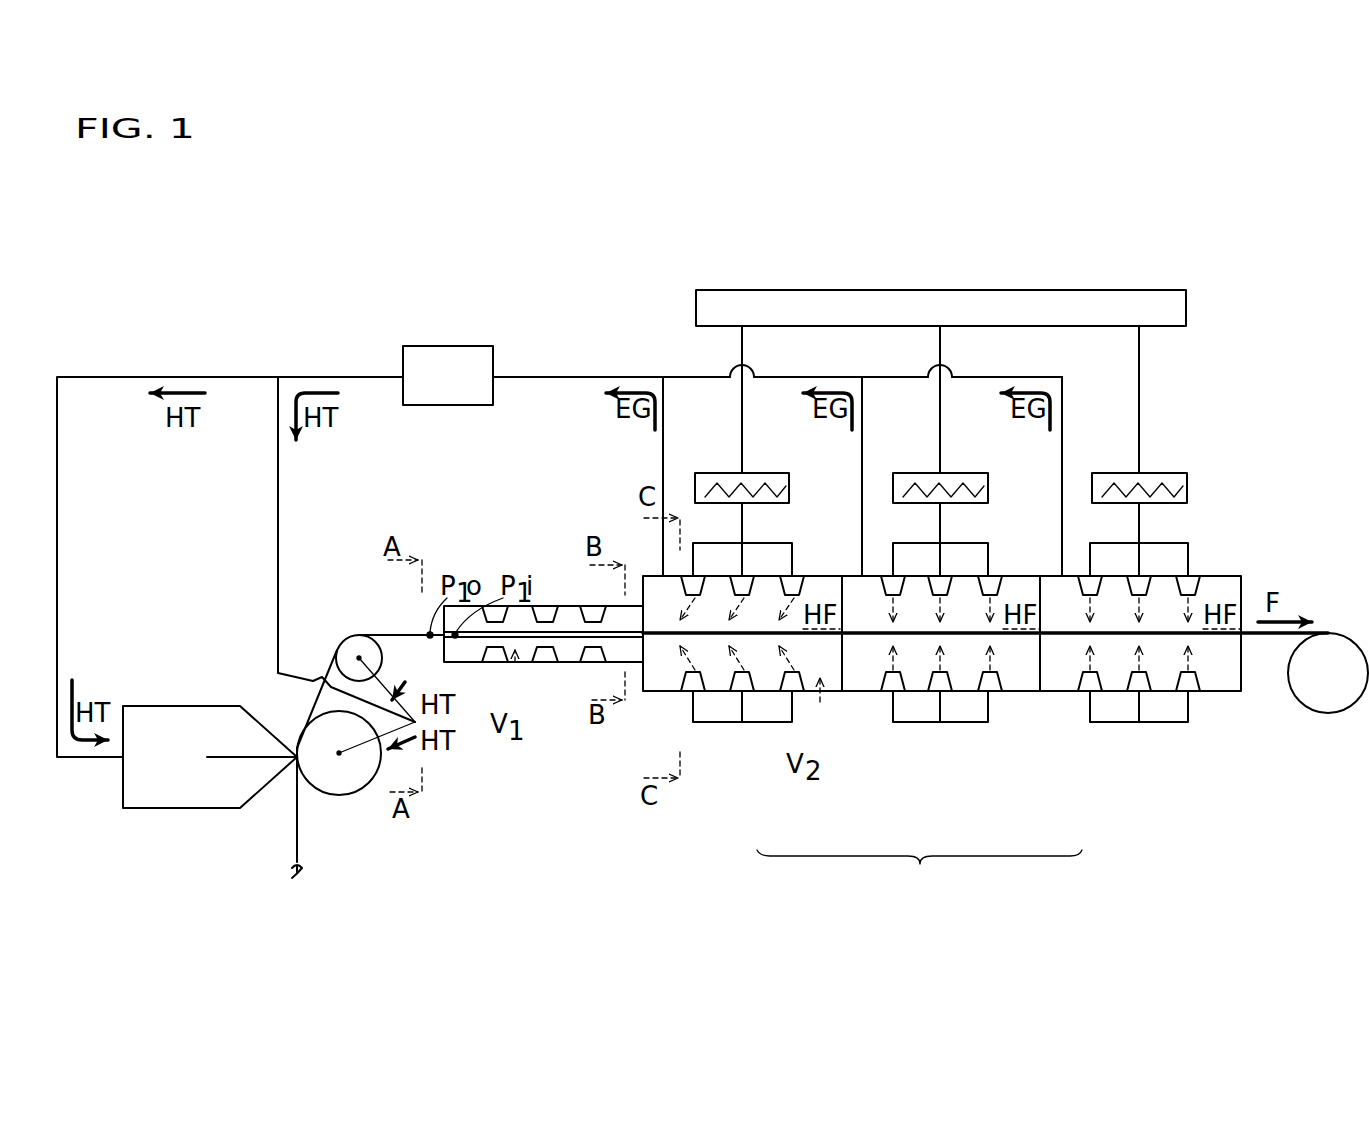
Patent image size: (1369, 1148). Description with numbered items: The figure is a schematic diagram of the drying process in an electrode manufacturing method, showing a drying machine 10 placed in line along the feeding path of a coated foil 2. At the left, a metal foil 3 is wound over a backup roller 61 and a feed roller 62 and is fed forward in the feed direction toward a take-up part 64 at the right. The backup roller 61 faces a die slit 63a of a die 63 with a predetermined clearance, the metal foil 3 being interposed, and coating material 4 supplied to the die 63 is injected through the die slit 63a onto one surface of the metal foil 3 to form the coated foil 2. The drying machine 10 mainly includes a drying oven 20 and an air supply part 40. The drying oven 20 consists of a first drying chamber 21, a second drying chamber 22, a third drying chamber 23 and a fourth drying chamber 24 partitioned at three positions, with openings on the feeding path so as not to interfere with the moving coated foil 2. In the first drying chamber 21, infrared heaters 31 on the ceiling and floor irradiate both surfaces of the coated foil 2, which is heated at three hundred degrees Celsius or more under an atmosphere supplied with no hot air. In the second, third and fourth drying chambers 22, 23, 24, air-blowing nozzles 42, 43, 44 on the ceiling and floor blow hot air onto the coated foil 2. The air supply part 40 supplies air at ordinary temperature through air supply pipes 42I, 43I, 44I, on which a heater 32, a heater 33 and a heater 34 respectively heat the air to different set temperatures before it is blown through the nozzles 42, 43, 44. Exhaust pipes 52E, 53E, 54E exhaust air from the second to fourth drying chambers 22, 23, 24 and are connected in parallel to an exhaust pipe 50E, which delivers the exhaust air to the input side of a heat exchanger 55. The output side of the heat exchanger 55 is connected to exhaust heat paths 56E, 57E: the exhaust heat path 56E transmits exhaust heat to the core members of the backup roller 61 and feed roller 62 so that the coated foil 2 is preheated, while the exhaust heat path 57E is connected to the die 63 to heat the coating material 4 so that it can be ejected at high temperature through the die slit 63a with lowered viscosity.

The drying machine 10 is at (658, 285).
The coated foil 2 is at (310, 708).
The metal foil 3 is at (297, 832).
The coating material 4 is at (288, 754).
The drying oven 20 is at (919, 874).
The first drying chamber 21 is at (645, 694).
The second drying chamber 22 is at (828, 694).
The third drying chamber 23 is at (1023, 694).
The fourth drying chamber 24 is at (1215, 694).
The infrared heaters 31 is at (545, 608).
The heater 32 is at (712, 473).
The heater 33 is at (910, 473).
The heater 34 is at (1109, 473).
The air supply part 40 is at (1105, 290).
The air-blowing nozzle 42 is at (795, 575).
The air-blowing nozzle 43 is at (994, 575).
The air-blowing nozzle 44 is at (1192, 575).
The air supply pipe 42I is at (742, 349).
The air supply pipe 43I is at (940, 349).
The air supply pipe 44I is at (1139, 364).
The exhaust pipe 50E is at (552, 377).
The exhaust pipe 52E is at (663, 464).
The exhaust pipe 53E is at (862, 505).
The exhaust pipe 54E is at (1062, 505).
The heat exchanger 55 is at (458, 346).
The exhaust heat path 56E is at (278, 571).
The exhaust heat path 57E is at (57, 590).
The backup roller 61 is at (352, 796).
The feed roller 62 is at (380, 663).
The die 63 is at (165, 706).
The die slit 63a is at (235, 758).
The take-up part 64 is at (1325, 714).